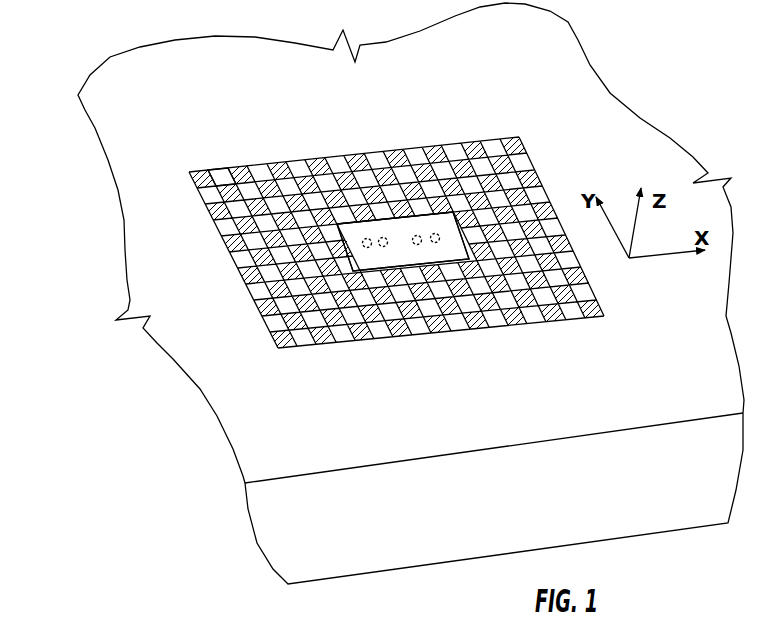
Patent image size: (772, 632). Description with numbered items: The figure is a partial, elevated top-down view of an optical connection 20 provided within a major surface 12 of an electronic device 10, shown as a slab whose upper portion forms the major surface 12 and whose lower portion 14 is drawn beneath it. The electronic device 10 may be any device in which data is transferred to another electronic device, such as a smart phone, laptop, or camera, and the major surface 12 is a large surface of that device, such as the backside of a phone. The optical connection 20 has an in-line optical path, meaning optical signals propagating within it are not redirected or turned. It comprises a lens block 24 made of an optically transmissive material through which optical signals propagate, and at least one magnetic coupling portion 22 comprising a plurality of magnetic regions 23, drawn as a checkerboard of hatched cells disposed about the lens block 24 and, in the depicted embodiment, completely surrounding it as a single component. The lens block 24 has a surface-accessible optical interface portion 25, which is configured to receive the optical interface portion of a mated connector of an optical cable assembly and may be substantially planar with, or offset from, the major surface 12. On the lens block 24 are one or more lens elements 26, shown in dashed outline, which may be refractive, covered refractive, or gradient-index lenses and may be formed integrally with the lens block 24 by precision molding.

The electronic device 10 is at (102, 43).
The major surface 12 is at (230, 416).
The base layer 14 is at (295, 534).
The optical connection 20 is at (237, 123).
The magnetic coupling portion 22 is at (537, 164).
The magnetic regions 23 is at (218, 175).
The lens block 24 is at (376, 210).
The optical interface portion 25 is at (418, 222).
The lens elements 26 is at (370, 248).